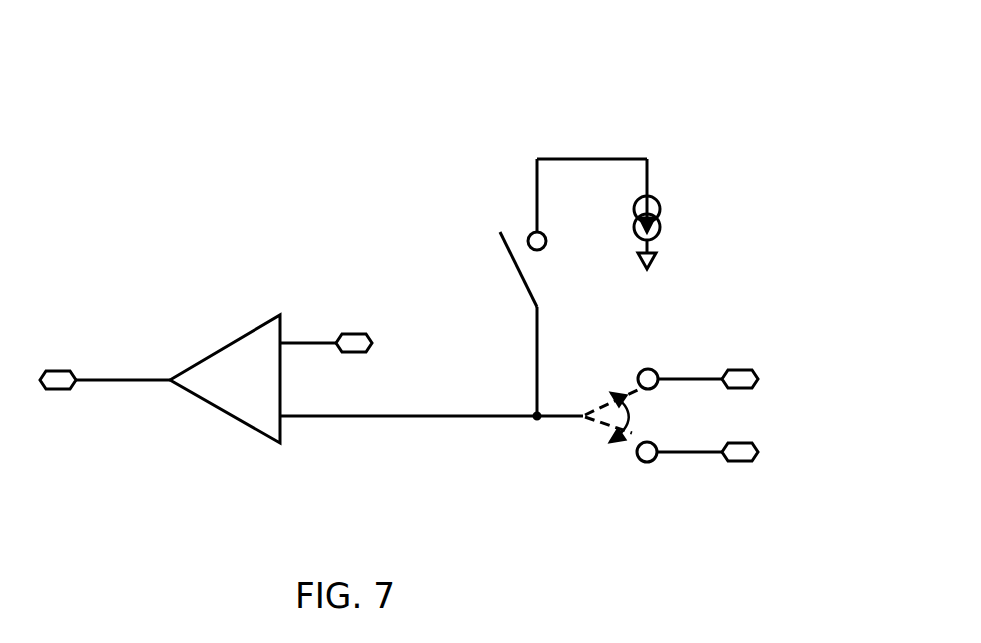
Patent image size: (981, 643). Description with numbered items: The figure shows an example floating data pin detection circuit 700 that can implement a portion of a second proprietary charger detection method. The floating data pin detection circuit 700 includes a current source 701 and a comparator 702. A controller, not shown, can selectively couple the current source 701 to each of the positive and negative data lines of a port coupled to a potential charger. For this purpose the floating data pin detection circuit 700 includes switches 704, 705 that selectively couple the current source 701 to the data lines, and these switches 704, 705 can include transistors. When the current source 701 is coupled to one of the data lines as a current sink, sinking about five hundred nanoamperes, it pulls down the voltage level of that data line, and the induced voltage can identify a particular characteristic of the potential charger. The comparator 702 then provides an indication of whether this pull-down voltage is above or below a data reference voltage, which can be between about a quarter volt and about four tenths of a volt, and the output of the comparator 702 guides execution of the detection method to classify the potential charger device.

The floating data pin detection circuit 700 is at (738, 142).
The current source 701 is at (656, 196).
The comparator 702 is at (197, 295).
The switch 704 is at (518, 265).
The switch 705 is at (593, 462).